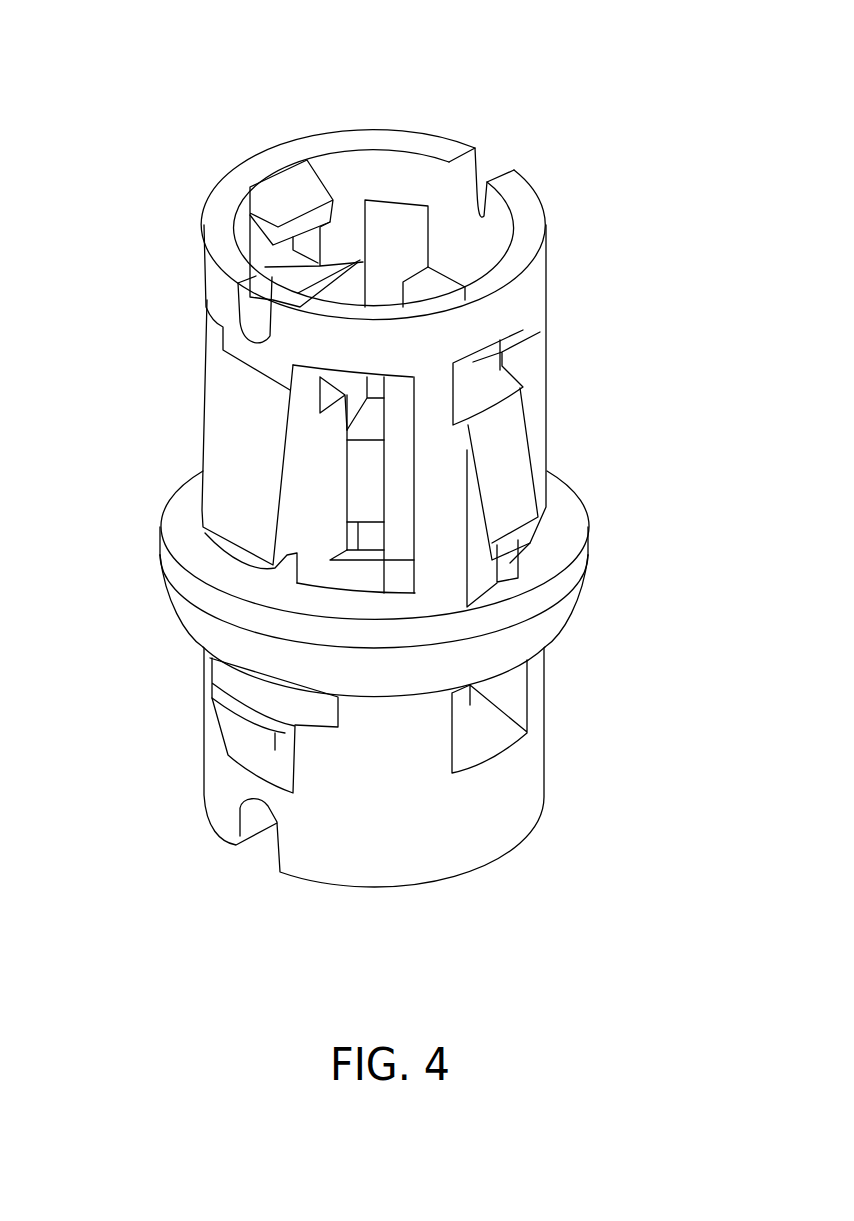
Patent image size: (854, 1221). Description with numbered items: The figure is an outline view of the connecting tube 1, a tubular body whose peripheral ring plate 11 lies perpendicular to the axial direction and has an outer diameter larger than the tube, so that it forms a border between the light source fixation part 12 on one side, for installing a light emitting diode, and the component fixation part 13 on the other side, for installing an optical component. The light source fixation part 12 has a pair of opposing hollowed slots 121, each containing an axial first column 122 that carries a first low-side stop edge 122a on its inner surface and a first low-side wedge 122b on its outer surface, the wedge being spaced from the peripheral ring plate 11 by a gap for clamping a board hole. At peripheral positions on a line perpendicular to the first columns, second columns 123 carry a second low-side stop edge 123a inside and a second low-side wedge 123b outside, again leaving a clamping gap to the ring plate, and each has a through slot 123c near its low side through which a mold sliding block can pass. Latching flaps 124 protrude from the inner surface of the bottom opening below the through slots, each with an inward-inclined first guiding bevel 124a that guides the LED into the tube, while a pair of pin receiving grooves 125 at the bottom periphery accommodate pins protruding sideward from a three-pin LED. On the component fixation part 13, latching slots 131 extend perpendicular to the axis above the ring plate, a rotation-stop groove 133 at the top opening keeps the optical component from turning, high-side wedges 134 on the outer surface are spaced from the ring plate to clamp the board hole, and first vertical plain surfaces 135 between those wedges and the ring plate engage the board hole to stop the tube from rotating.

The connecting tube 1 is at (522, 66).
The peripheral ring plate 11 is at (580, 570).
The light source fixation part 12 is at (610, 167).
The component fixation part 13 is at (610, 628).
The hollowed slot 121 is at (388, 176).
The first column 122 is at (238, 445).
The first low-side stop edge 122a is at (437, 272).
The first low-side wedge 122b is at (270, 597).
The second column 123 is at (507, 450).
The second low-side stop edge 123a is at (468, 382).
The second low-side wedge 123b is at (543, 616).
The through slot 123c is at (538, 342).
The latching flap 124 is at (282, 246).
The first guiding bevel 124a is at (288, 197).
The pin receiving groove 125 is at (483, 172).
The latching slot 131 is at (508, 698).
The rotation-stop groove 133 is at (267, 840).
The high-side wedge 134 is at (238, 744).
The first vertical plain surface 135 is at (322, 703).